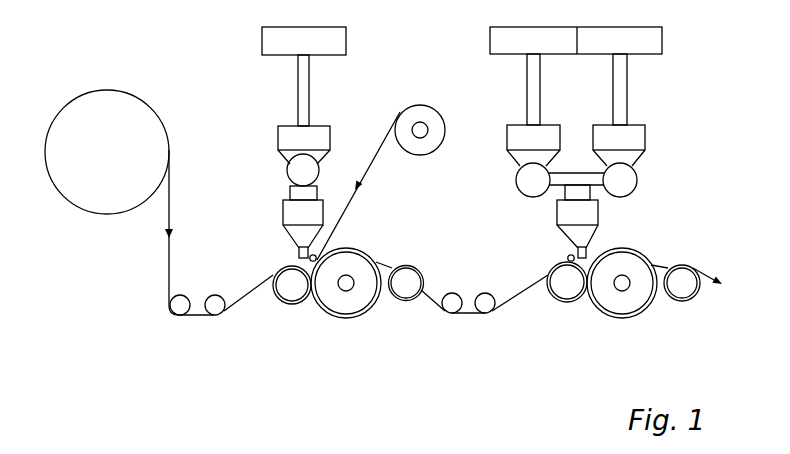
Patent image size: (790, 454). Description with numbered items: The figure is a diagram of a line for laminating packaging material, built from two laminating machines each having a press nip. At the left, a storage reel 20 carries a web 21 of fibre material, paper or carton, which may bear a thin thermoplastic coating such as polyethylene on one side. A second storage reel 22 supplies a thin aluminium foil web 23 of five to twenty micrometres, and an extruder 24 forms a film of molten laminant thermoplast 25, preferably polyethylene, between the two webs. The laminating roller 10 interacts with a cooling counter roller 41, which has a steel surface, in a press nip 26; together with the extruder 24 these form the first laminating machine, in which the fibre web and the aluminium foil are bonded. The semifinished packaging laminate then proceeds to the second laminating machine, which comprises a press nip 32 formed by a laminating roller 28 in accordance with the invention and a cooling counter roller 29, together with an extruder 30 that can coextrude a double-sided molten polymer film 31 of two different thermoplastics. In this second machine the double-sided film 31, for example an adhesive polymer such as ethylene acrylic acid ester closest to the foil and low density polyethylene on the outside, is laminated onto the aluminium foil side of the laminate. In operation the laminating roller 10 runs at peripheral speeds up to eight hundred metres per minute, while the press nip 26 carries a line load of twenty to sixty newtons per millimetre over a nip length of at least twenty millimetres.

The laminating roller 10 is at (274, 321).
The storage reel 20 is at (120, 102).
The web of fibre material 21 is at (172, 196).
The storage reel 22 is at (428, 114).
The aluminium foil web 23 is at (370, 158).
The extruder 24 is at (262, 131).
The film of molten laminant thermoplast 25 is at (300, 256).
The press nip 26 is at (311, 311).
The laminating roller 28 is at (557, 292).
The cooling counter roller 29 is at (634, 264).
The extruder 30 is at (661, 131).
The double-sided molten polymer film 31 is at (598, 246).
The press nip 32 is at (587, 312).
The cooling counter roller 41 is at (352, 263).